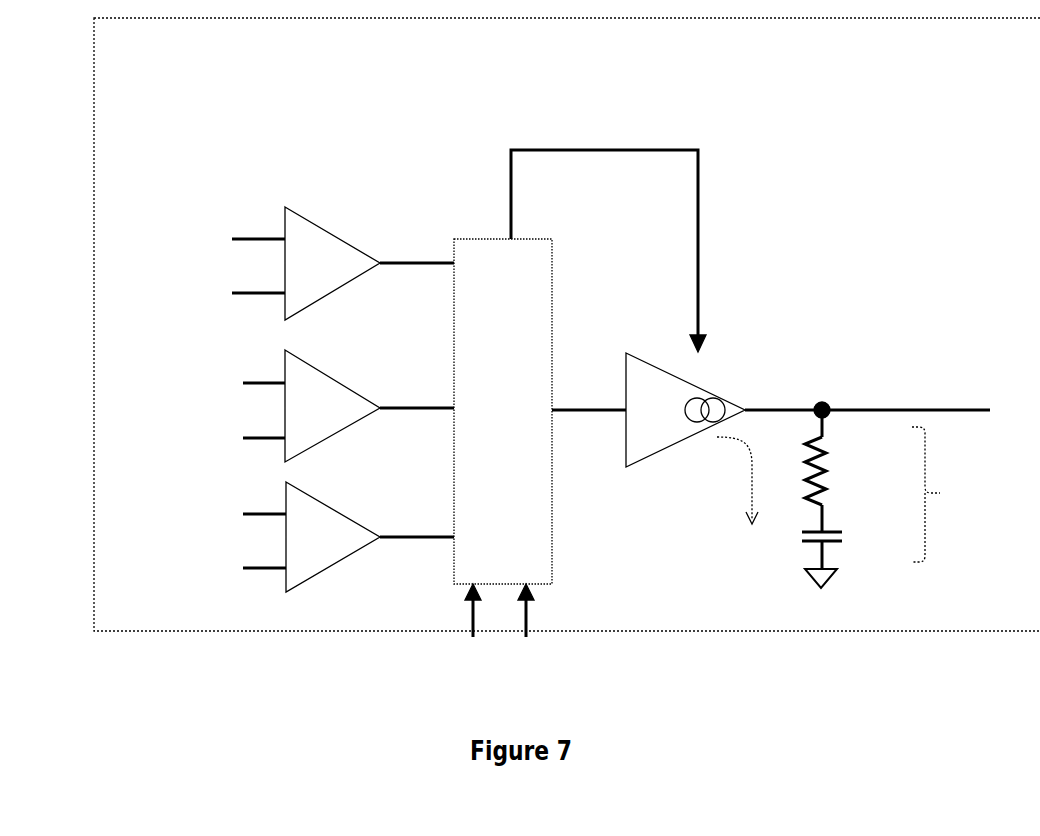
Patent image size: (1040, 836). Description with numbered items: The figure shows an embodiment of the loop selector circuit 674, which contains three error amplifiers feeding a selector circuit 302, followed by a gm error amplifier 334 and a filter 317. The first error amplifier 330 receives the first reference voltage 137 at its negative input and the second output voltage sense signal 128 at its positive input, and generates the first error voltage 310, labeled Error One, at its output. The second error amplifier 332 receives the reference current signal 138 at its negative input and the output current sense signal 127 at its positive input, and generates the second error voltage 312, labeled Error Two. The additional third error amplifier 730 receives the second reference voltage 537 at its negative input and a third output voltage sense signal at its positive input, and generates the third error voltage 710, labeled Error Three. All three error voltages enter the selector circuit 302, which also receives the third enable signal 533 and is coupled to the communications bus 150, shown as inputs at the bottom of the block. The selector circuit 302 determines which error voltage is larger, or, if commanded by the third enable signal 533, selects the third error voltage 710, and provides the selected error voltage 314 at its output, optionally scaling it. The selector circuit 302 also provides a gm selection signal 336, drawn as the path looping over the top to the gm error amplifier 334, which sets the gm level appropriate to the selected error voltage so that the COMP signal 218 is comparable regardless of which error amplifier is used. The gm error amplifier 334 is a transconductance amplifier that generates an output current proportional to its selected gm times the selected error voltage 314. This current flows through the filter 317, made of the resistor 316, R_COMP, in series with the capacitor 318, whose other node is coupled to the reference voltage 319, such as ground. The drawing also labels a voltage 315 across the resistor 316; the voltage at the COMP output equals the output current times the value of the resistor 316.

The loop selector circuit 674 is at (567, 324).
The first reference voltage 137 is at (221, 250).
The second output voltage sense signal 128 is at (228, 305).
The first error amplifier 330 is at (332, 263).
The first error voltage 310 is at (416, 265).
The reference current signal 138 is at (240, 394).
The output current sense signal 127 is at (239, 444).
The second error amplifier 332 is at (332, 406).
The second error voltage 312 is at (416, 409).
The second reference voltage 537 is at (229, 526).
The third enable signal 533 is at (341, 632).
The third error amplifier 730 is at (333, 537).
The third error voltage 710 is at (416, 537).
The selector circuit 302 is at (503, 411).
The communications bus 150 is at (537, 631).
The selected error voltage 314 is at (589, 418).
The gm error amplifier 334 is at (676, 414).
The gm selection signal 336 is at (638, 253).
The COMP signal 218 is at (867, 379).
The voltage across Rcomp 315 is at (758, 479).
The resistor 316 is at (853, 471).
The capacitor 318 is at (848, 547).
The reference voltage 319 is at (842, 588).
The filter 317 is at (959, 494).